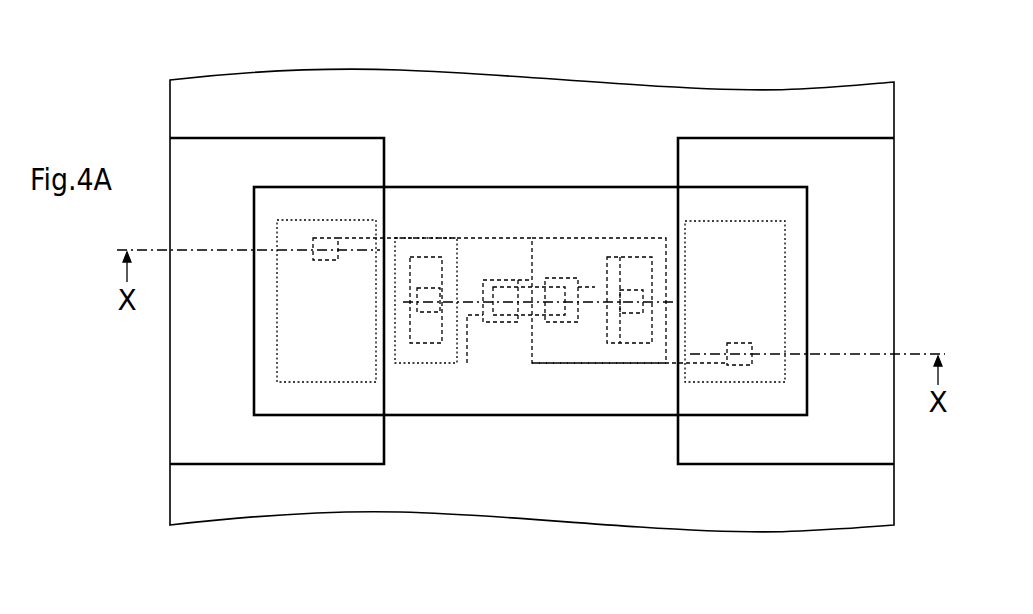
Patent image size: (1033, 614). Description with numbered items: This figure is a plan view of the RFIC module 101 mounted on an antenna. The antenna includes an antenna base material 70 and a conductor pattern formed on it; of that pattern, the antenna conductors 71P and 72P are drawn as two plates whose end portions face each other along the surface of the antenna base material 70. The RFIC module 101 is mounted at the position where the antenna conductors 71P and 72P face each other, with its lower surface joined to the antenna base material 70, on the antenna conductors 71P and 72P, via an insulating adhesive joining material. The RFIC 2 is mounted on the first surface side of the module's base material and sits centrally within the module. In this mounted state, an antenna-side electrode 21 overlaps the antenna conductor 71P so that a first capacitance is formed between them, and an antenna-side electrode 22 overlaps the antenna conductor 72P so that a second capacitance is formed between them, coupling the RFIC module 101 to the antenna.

The antenna base material 70 is at (555, 502).
The antenna conductor 71P is at (224, 162).
The antenna conductor 72P is at (851, 162).
The RFIC module 101 is at (604, 158).
The antenna-side electrode 21 is at (339, 220).
The antenna-side electrode 22 is at (735, 221).
The RFIC 2 is at (540, 272).